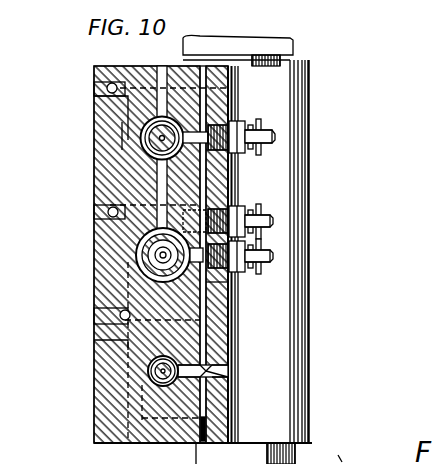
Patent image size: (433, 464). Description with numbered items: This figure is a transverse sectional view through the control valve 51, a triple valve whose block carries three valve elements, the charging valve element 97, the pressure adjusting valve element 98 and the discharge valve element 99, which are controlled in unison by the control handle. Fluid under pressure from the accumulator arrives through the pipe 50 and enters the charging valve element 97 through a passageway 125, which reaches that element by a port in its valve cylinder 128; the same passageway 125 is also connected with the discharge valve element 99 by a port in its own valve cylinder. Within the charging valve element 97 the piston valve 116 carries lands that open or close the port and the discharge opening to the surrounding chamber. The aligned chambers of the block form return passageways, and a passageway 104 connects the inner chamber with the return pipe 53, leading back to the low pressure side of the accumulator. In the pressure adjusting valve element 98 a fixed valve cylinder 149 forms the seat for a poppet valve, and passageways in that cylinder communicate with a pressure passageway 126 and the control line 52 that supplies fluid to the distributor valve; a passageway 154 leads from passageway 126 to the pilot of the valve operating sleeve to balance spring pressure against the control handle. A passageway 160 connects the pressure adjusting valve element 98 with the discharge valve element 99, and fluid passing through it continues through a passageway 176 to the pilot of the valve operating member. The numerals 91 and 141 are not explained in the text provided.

The slide block 91 is at (132, 66).
The passageway 125 is at (208, 125).
The control valve 51 is at (319, 354).
The lubrication passage 141 is at (94, 74).
The valve cylinder 128 is at (97, 105).
The piston valve 116 is at (100, 127).
The charging valve element 97 is at (141, 143).
The pipe 50 is at (270, 128).
The passageway 154 is at (113, 200).
The pressure adjusting valve element 98 is at (136, 255).
The control line 52 is at (268, 223).
The return pipe 53 is at (274, 257).
The pressure passageway 126 is at (193, 208).
The passageway 104 is at (233, 282).
The passageway 176 is at (118, 315).
The passageway 160 is at (108, 343).
The discharge valve element 99 is at (147, 371).
The valve cylinder 149 is at (342, 462).